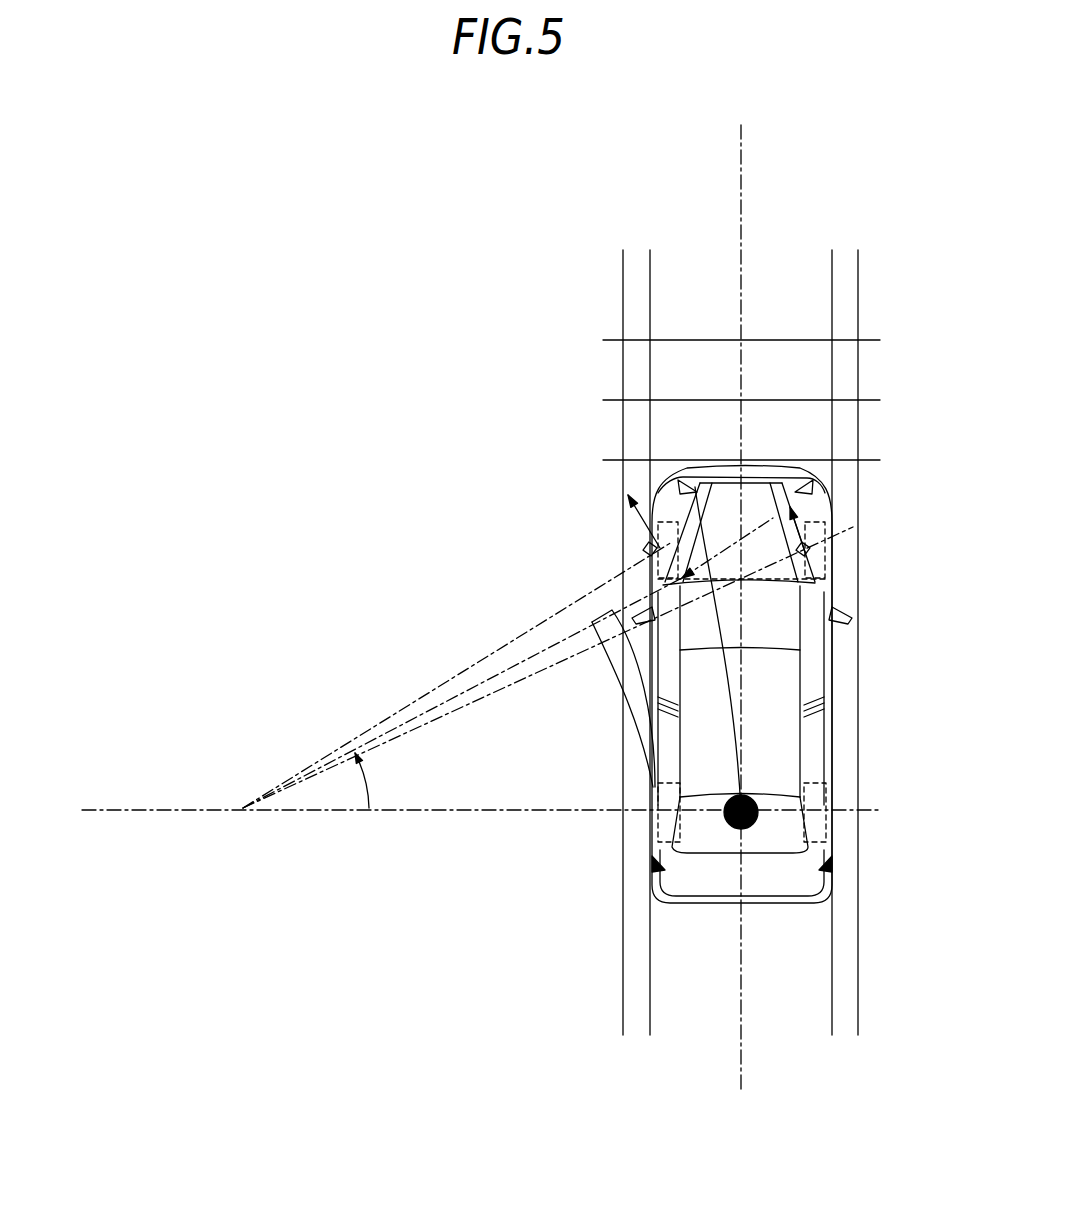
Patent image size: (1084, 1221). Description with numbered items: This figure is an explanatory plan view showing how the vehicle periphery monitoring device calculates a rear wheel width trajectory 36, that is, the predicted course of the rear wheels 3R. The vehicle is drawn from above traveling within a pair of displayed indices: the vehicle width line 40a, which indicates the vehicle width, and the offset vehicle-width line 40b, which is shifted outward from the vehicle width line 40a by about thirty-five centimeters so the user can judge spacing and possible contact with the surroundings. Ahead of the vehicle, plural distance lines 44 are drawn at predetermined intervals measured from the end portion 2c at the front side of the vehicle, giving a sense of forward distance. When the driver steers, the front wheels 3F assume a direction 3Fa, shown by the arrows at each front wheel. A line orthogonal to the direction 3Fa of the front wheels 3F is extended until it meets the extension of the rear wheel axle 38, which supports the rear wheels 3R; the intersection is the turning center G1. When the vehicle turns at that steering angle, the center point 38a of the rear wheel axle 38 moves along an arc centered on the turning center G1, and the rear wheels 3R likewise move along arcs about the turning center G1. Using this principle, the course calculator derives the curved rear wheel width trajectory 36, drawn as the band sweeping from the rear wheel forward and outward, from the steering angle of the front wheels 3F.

The vehicle width line 40a is at (652, 274).
The offset vehicle-width line 40b is at (622, 298).
The distance lines 44 is at (705, 340).
The end portion 2c is at (723, 467).
The front wheels 3F is at (640, 557).
The direction of the front wheels 3Fa is at (640, 523).
The rear wheels 3R is at (652, 830).
The rear wheel width trajectory 36 is at (600, 614).
The turning center G1 is at (245, 814).
The rear wheel axle 38 is at (716, 818).
The center point of the rear wheel axle 38a is at (748, 830).